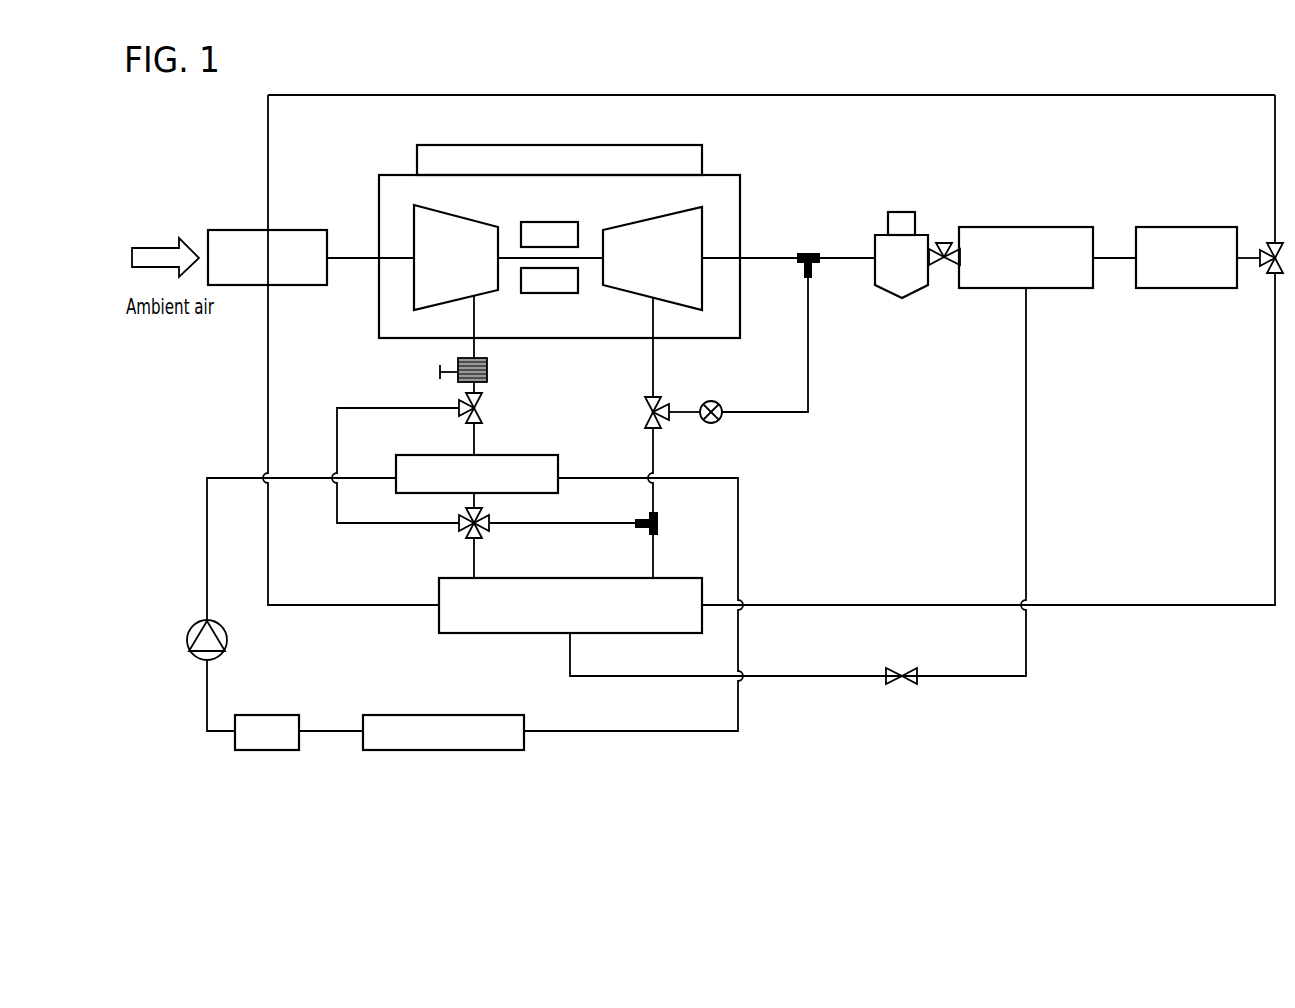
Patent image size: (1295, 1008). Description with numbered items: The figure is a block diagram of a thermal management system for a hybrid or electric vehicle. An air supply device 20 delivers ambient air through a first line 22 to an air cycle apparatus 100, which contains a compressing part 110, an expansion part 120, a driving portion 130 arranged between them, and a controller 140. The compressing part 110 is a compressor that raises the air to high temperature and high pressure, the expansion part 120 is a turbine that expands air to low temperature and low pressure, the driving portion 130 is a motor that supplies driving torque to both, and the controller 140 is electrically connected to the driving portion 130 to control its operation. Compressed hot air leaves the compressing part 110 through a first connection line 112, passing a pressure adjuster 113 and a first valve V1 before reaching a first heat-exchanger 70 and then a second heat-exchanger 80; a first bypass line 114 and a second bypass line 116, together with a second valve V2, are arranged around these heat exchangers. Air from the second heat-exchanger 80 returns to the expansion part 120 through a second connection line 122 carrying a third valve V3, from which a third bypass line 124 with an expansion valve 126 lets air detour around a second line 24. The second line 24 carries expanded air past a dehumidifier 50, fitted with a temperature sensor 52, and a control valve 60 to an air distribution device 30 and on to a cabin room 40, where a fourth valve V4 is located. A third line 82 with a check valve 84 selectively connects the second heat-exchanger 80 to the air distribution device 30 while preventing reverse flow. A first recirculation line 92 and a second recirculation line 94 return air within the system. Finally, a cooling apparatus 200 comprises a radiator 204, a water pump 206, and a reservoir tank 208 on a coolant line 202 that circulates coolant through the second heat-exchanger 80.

The air supply device 20 is at (228, 230).
The first line 22 is at (337, 262).
The second line 24 is at (836, 257).
The air distribution device 30 is at (1051, 227).
The cabin room 40 is at (1198, 227).
The dehumidifier 50 is at (915, 299).
The temperature sensor 52 is at (896, 212).
The control valve 60 is at (944, 228).
The first heat-exchanger 70 is at (548, 455).
The second heat-exchanger 80 is at (487, 635).
The third line 82 is at (1028, 411).
The check valve 84 is at (907, 685).
The first recirculation line 92 is at (266, 374).
The second recirculation line 94 is at (963, 94).
The air cycle apparatus 100 is at (762, 163).
The compressing part 110 is at (472, 219).
The first connection line 112 is at (476, 322).
The pressure adjuster 113 is at (488, 374).
The first bypass line 114 is at (348, 406).
The second bypass line 116 is at (536, 526).
The expansion part 120 is at (658, 218).
The second connection line 122 is at (651, 381).
The third bypass line 124 is at (810, 378).
The expansion valve 126 is at (712, 400).
The driving portion 130 is at (562, 222).
The controller 140 is at (688, 145).
The cooling apparatus 200 is at (178, 492).
The coolant line 202 is at (206, 565).
The radiator 204 is at (399, 715).
The water pump 206 is at (229, 640).
The reservoir tank 208 is at (284, 715).
The first valve V1 is at (480, 412).
The second valve V2 is at (462, 530).
The third valve V3 is at (648, 418).
The fourth valve V4 is at (1273, 270).